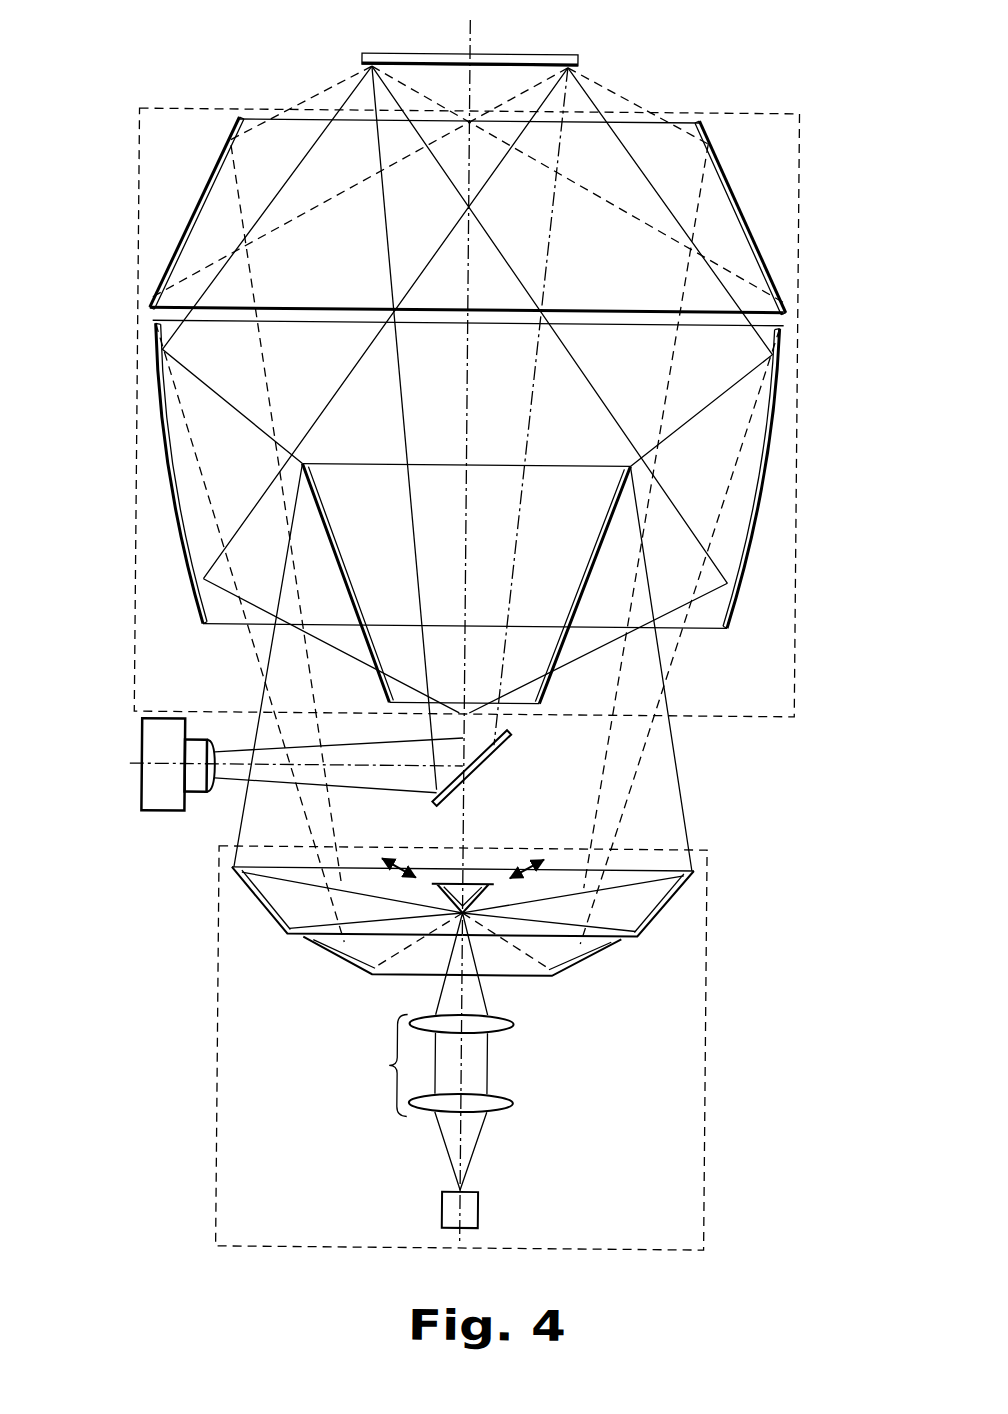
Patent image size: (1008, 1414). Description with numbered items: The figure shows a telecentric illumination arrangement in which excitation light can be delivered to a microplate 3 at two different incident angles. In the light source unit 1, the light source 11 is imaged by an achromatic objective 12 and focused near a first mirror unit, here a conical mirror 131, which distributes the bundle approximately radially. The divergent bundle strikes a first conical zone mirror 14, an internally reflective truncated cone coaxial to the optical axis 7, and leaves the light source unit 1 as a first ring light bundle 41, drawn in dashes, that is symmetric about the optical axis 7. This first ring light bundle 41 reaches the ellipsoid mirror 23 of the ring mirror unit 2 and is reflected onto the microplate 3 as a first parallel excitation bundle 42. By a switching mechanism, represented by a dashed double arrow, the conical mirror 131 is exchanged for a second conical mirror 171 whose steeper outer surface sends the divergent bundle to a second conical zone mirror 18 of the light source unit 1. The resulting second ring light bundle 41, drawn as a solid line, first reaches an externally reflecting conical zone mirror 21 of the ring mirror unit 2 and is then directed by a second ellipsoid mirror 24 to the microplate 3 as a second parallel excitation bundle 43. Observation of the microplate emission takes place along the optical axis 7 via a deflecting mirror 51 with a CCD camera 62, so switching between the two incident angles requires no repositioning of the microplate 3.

The light source unit 1 is at (721, 1110).
The ring mirror unit 2 is at (797, 582).
The microplate 3 is at (359, 56).
The optical axis 7 is at (469, 40).
The light source 11 is at (480, 1202).
The achromatic objective 12 is at (388, 1081).
The conical mirror 131 is at (434, 893).
The conical zone mirror 14 is at (360, 948).
The second conical mirror 171 is at (481, 914).
The second conical zone mirror 18 is at (660, 933).
The conical zone mirror 21 is at (345, 584).
The ellipsoid mirror 23 is at (190, 207).
The second ellipsoid mirror 24 is at (175, 457).
The ring light bundle 41 is at (631, 824).
The first parallel excitation bundle 42 is at (614, 94).
The second parallel excitation bundle 43 is at (661, 200).
The deflecting mirror 51 is at (485, 760).
The CCD camera 62 is at (160, 791).